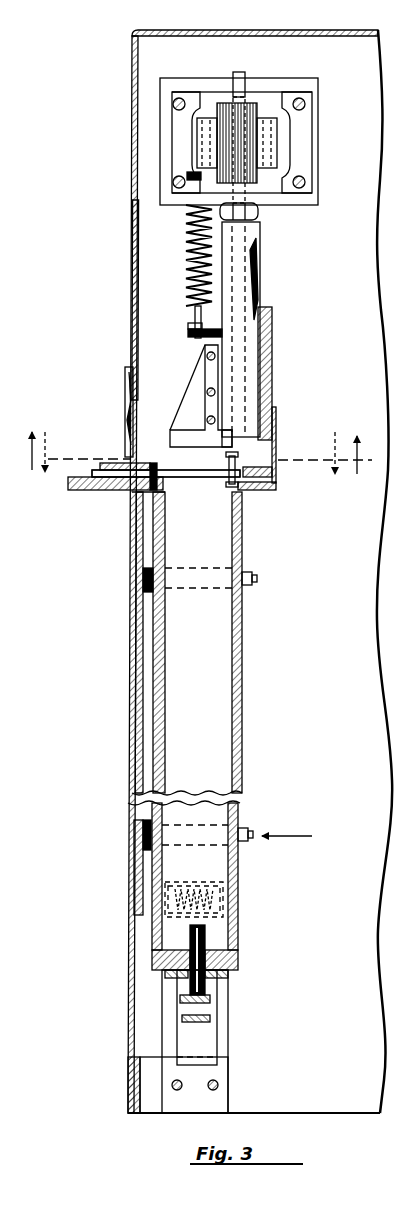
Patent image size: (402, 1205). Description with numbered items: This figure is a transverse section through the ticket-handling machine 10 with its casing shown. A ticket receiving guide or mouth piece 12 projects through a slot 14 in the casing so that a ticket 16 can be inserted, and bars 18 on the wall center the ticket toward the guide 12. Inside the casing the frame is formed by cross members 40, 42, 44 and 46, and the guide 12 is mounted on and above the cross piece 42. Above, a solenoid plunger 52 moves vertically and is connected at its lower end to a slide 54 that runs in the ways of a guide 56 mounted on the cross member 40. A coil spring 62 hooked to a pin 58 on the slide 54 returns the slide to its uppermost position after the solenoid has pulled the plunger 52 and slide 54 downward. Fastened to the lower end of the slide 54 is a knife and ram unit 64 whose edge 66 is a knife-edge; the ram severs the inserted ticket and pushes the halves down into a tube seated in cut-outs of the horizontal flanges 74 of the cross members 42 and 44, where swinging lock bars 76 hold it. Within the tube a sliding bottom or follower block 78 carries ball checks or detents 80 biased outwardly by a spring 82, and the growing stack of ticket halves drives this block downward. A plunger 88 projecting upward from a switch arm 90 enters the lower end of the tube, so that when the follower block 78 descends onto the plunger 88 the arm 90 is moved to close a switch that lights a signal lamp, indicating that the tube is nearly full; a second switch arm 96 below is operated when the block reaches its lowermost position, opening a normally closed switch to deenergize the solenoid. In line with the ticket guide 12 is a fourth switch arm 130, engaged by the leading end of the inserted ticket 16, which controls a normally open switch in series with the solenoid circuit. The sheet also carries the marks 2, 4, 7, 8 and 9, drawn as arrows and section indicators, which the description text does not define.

The housing 2 is at (128, 193).
The housing side wall 4 is at (128, 265).
The section line 7- 7 is at (202, 444).
The bracket assembly 8 is at (52, 488).
The view arrow 9 is at (297, 835).
The machine 10 is at (128, 557).
The ticket receiving guide 12 is at (95, 486).
The slot 14 is at (152, 463).
The ticket 16 is at (100, 465).
The bars 18 is at (125, 388).
The cross member 40 is at (272, 318).
The cross member 42 is at (143, 576).
The cross member 44 is at (134, 852).
The cross member 46 is at (128, 1080).
The plunger 52 is at (248, 72).
The slide 54 is at (258, 213).
The guide 56 is at (262, 262).
The pin 58 is at (188, 334).
The coil spring 62 is at (188, 272).
The knife and ram unit 64 is at (200, 388).
The knife-edge 66 is at (190, 436).
The horizontal flanges 74 is at (240, 595).
The swinging lock bars 76 is at (255, 578).
The follower block 78 is at (220, 882).
The ball checks 80 is at (226, 904).
The spring 82 is at (226, 880).
The plunger 88 is at (206, 936).
The switch arm 90 is at (211, 998).
The second switch arm 96 is at (211, 1018).
The fourth switch arm 130 is at (276, 485).